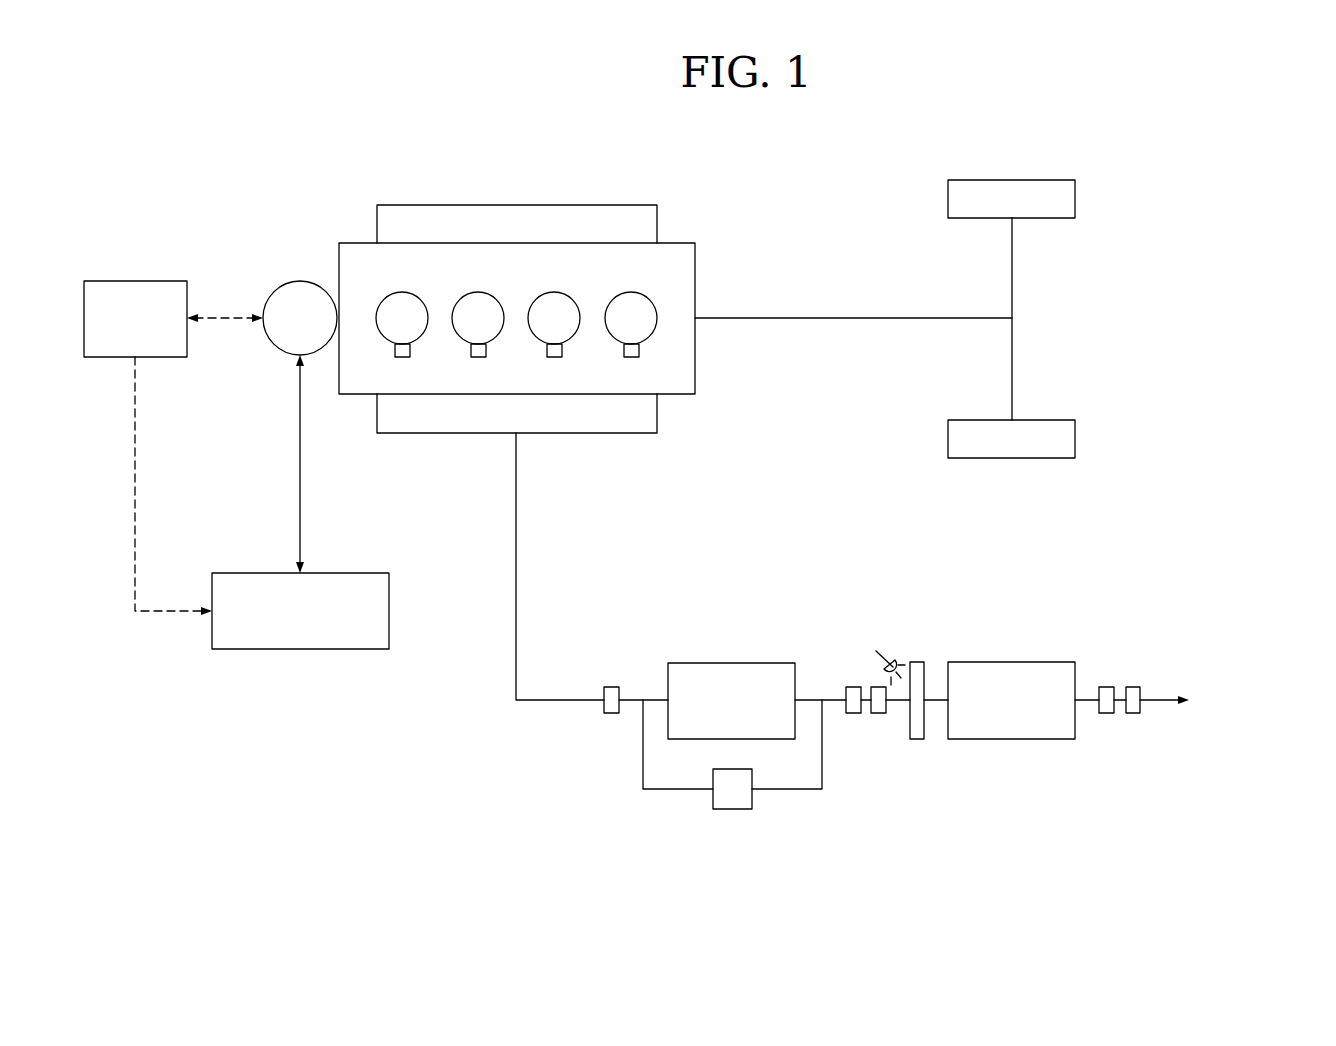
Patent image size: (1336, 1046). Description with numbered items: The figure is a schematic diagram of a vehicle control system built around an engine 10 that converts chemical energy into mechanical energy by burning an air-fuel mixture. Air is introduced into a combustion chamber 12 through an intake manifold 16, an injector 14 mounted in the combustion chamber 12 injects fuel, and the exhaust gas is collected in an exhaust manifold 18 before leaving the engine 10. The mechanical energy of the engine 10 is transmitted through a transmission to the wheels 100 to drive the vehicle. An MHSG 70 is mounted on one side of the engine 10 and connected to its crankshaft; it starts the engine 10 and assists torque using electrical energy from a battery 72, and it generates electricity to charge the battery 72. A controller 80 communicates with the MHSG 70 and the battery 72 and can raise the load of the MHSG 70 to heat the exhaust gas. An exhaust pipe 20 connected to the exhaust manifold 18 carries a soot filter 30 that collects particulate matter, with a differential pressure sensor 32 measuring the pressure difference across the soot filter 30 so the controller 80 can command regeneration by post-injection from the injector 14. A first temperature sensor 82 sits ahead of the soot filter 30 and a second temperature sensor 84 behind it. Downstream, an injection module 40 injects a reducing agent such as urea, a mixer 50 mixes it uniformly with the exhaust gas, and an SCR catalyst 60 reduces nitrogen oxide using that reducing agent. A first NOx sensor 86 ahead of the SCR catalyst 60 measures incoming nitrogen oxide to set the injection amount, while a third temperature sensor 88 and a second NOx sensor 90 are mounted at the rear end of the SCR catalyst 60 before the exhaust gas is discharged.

The engine 10 is at (470, 168).
The combustion chamber 12 is at (380, 305).
The injector 14 is at (401, 357).
The intake manifold 16 is at (573, 205).
The exhaust manifold 18 is at (441, 433).
The exhaust pipe 20 is at (518, 545).
The soot filter 30 is at (735, 663).
The differential pressure sensor 32 is at (732, 810).
The injection module 40 is at (886, 650).
The mixer 50 is at (917, 662).
The SCR catalyst 60 is at (1012, 662).
The MHSG 70 is at (290, 283).
The battery 72 is at (300, 650).
The controller 80 is at (137, 281).
The first temperature sensor 82 is at (610, 714).
The second temperature sensor 84 is at (851, 714).
The first NOx sensor 86 is at (878, 714).
The third temperature sensor 88 is at (1105, 714).
The second NOx sensor 90 is at (1131, 714).
The wheels 100 is at (1045, 180).